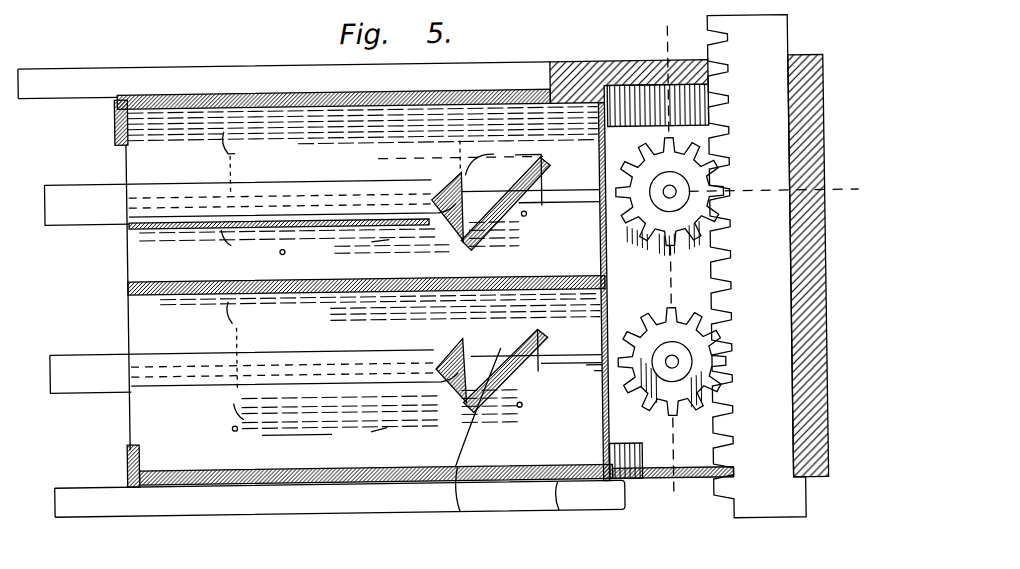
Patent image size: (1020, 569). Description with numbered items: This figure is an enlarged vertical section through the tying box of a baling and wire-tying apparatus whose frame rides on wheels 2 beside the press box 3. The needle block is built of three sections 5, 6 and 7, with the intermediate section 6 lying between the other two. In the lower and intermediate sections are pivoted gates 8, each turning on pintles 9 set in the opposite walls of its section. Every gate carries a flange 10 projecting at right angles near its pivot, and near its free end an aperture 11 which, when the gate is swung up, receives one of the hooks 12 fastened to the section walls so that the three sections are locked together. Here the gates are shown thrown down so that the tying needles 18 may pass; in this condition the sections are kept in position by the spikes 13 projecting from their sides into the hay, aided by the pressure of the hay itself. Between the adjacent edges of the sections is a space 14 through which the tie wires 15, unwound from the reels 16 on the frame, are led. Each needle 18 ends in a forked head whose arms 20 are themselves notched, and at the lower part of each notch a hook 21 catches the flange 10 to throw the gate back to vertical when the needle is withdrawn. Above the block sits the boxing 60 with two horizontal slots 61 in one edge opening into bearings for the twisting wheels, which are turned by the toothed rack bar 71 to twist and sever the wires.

The wheels 2 is at (372, 52).
The press box 3 is at (116, 127).
The block section 5 is at (210, 97).
The intermediate block section 6 is at (611, 174).
The block section 7 is at (559, 512).
The gates 8 is at (298, 431).
The pintles 9 is at (224, 437).
The flange 10 is at (210, 236).
The apertures 11 is at (367, 342).
The hooks 12 is at (224, 150).
The spikes 13 is at (452, 246).
The space 14 is at (556, 207).
The tie wires 15 is at (442, 402).
The reels 16 is at (518, 155).
The tying needles 18 is at (305, 188).
The arm 20 is at (78, 80).
The hook 21 is at (455, 512).
The boxing 60 is at (670, 276).
The slots 61 is at (645, 242).
The rack bar 71 is at (768, 266).